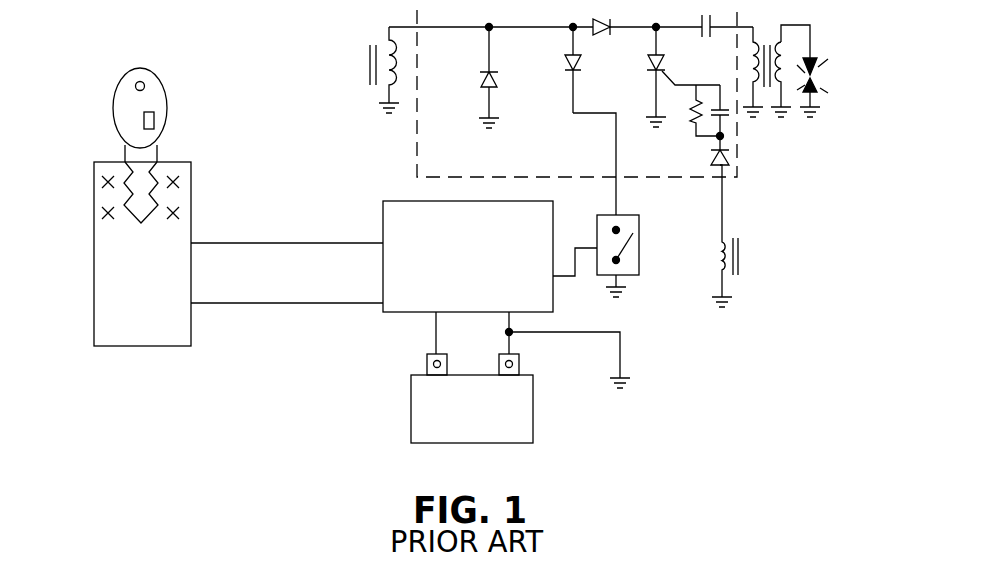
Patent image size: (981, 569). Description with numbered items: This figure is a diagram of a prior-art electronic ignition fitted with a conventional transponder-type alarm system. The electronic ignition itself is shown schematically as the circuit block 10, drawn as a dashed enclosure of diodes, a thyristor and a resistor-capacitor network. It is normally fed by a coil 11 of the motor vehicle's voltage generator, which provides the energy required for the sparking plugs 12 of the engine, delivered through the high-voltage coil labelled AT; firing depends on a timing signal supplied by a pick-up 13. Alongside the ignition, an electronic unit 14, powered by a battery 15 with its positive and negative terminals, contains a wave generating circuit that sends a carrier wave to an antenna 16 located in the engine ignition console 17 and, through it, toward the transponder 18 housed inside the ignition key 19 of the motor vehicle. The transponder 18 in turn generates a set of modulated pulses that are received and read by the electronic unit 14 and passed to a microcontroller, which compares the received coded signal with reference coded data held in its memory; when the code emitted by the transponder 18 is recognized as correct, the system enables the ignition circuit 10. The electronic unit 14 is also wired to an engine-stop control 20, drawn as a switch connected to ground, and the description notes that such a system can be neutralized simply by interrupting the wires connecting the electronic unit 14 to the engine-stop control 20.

The ignition circuit 10 is at (468, 164).
The coil 11 is at (367, 63).
The sparking plugs 12 is at (828, 78).
The pick-up 13 is at (745, 262).
The electronic unit 14 is at (475, 299).
The battery 15 is at (476, 434).
The antenna 16 is at (102, 180).
The engine ignition console 17 is at (122, 297).
The transponder 18 is at (156, 120).
The ignition key 19 is at (123, 108).
The engine-stop control 20 is at (635, 250).